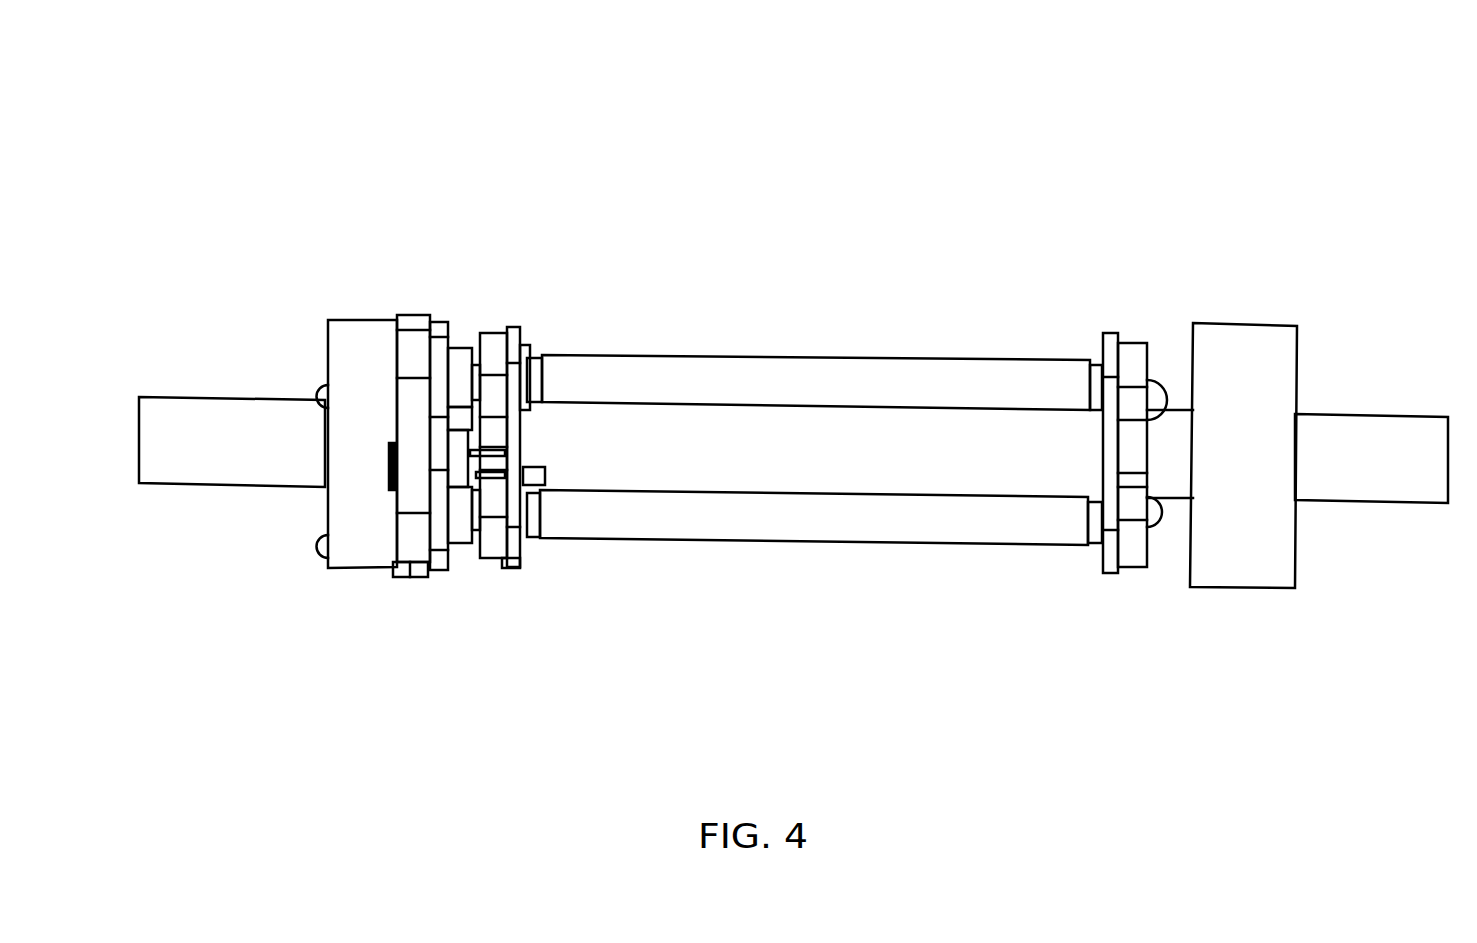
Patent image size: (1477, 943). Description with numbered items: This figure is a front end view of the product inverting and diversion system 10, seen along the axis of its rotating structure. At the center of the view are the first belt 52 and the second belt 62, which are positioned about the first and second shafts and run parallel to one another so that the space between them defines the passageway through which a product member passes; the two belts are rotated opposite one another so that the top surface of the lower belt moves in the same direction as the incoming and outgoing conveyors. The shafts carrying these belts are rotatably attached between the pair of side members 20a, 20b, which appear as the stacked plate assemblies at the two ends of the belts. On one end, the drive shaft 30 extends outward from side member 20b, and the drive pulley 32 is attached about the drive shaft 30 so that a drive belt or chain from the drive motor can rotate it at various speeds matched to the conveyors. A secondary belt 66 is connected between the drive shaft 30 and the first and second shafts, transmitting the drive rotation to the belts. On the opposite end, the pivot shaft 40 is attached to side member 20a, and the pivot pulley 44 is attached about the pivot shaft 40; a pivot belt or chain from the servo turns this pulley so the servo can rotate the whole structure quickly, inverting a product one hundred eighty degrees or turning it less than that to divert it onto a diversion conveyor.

The product inverting and diversion system 10 is at (1167, 142).
The drive shaft 30 is at (205, 397).
The drive pulley 32 is at (358, 320).
The secondary belt 66 is at (408, 577).
The side member 20b is at (507, 568).
The first belt 52 is at (818, 358).
The second belt 62 is at (818, 543).
The side member 20a is at (1103, 573).
The pivot pulley 44 is at (1248, 323).
The pivot shaft 40 is at (1384, 415).